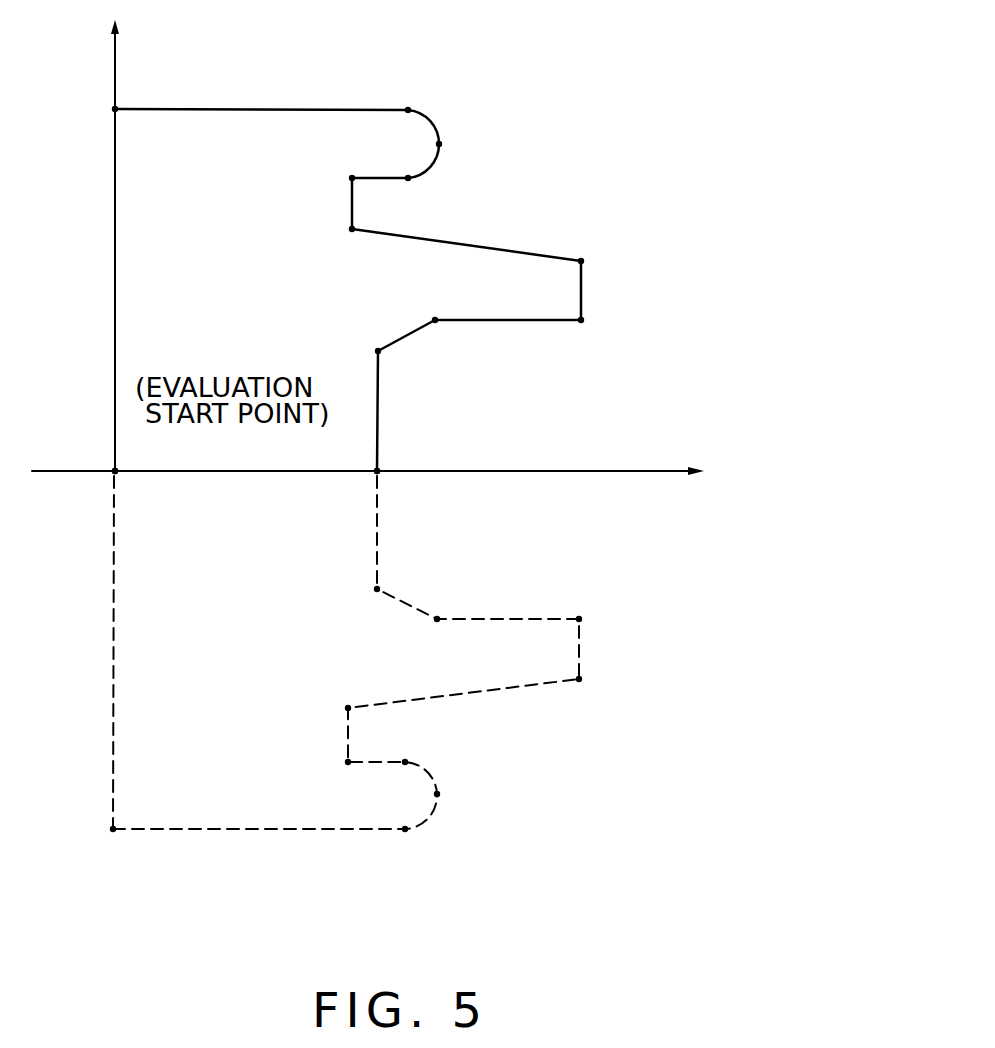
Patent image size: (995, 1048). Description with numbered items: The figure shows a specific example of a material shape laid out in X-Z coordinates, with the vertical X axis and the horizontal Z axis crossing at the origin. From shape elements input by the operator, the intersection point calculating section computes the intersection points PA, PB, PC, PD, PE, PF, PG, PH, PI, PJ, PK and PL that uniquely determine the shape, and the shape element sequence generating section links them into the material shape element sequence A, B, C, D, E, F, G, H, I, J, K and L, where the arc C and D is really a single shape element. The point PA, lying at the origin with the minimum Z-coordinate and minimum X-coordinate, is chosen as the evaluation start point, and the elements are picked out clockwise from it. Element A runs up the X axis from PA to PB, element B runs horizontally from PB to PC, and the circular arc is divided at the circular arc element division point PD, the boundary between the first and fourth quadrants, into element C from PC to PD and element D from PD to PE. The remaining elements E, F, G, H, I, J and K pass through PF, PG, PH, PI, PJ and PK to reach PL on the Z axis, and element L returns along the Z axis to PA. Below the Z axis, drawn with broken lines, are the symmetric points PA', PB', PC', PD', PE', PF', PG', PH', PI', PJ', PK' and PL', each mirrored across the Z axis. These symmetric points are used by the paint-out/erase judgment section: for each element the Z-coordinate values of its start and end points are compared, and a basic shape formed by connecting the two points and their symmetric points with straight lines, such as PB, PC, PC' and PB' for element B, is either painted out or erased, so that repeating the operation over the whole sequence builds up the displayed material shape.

The X-coordinate axis X is at (101, 245).
The Z-coordinate axis Z is at (368, 487).
The shape element A is at (115, 303).
The shape element B is at (270, 109).
The shape element C is at (435, 122).
The shape element D is at (438, 160).
The shape element E is at (378, 177).
The shape element F is at (350, 208).
The shape element G is at (485, 246).
The shape element H is at (583, 290).
The shape element I is at (512, 325).
The shape element J is at (408, 330).
The shape element K is at (378, 412).
The shape element L is at (263, 475).
The evaluation start point PA is at (143, 454).
The symmetric point of PA PA' is at (144, 490).
The intersection point PB is at (81, 114).
The symmetric point of PB PB' is at (119, 854).
The intersection point PC is at (428, 85).
The symmetric point of PC PC' is at (417, 856).
The circular arc element division point PD is at (643, 154).
The symmetric point of PD PD' is at (469, 781).
The intersection point PE is at (411, 202).
The symmetric point of PE PE' is at (429, 738).
The intersection point PF is at (320, 163).
The symmetric point of PF PF' is at (323, 778).
The intersection point PG is at (339, 257).
The symmetric point of PG PG' is at (324, 685).
The intersection point PH is at (601, 243).
The symmetric point of PH PH' is at (607, 695).
The intersection point PI is at (603, 340).
The symmetric point of PI PI' is at (601, 595).
The intersection point PJ is at (445, 344).
The symmetric point of PJ PJ' is at (455, 594).
The intersection point PK is at (356, 332).
The symmetric point of PK PK' is at (403, 568).
The intersection point PL is at (401, 451).
The symmetric point of PL PL' is at (404, 491).